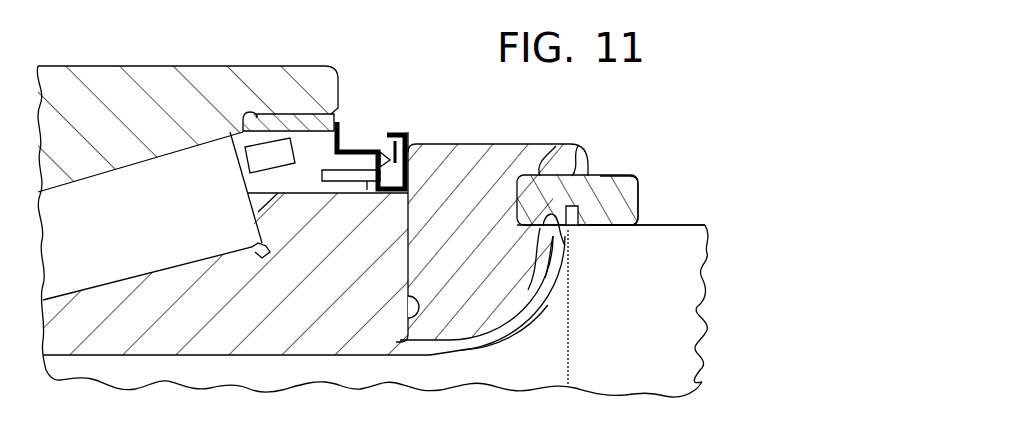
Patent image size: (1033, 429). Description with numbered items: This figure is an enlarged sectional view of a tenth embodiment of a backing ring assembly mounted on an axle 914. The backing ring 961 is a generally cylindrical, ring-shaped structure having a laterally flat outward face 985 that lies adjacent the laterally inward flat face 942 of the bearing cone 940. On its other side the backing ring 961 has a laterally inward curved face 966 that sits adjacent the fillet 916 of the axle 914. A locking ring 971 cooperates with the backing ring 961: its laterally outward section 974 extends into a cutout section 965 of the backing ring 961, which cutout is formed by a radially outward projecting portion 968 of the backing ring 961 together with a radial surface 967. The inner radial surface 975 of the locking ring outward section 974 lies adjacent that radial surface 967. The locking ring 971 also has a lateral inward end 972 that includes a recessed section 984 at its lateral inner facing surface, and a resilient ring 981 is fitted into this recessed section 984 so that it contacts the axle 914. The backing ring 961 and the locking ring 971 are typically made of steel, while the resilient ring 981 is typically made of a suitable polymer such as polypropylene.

The axle 914 is at (690, 302).
The fillet 916 is at (520, 303).
The bearing cone 940 is at (353, 358).
The laterally inward flat face 942 is at (408, 318).
The backing ring 961 is at (473, 144).
The cutout section 965 is at (598, 176).
The laterally inward curved face 966 is at (553, 268).
The radial surface 967 is at (565, 240).
The radially outward projecting portion 968 is at (575, 150).
The locking ring 971 is at (637, 180).
The lateral inward end 972 is at (639, 196).
The laterally outward section 974 is at (556, 148).
The inner radial surface 975 is at (553, 300).
The resilient ring 981 is at (600, 228).
The recessed section 984 is at (612, 227).
The laterally flat outward face 985 is at (408, 264).